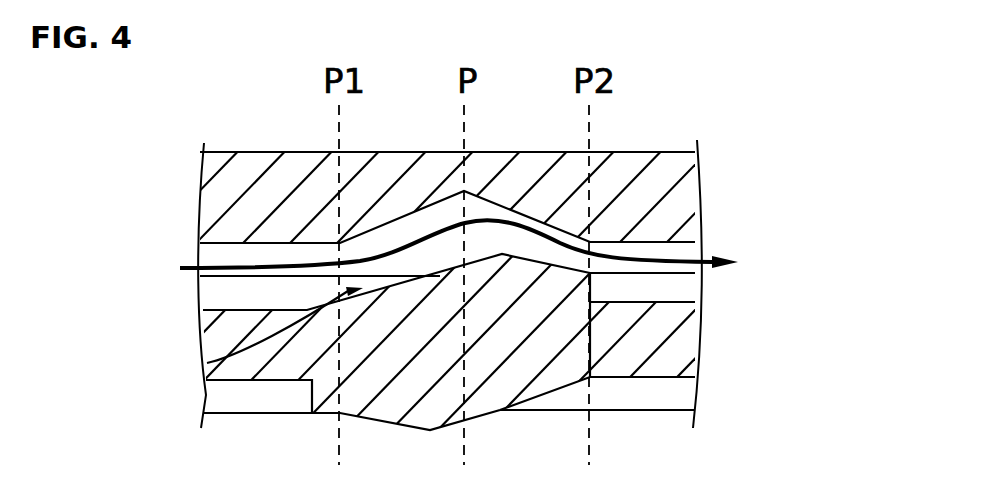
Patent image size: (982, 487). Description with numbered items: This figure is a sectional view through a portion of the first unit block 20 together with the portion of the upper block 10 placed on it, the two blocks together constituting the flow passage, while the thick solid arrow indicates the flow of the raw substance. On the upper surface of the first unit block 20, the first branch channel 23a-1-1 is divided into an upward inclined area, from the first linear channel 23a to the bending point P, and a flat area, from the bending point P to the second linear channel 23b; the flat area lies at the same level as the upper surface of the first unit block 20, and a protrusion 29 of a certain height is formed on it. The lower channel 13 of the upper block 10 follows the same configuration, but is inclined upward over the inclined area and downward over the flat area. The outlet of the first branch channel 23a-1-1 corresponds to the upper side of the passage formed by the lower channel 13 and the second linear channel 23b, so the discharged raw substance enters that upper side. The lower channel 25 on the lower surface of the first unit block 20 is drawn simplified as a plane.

The upper block 10 is at (722, 180).
The lower channel 13 is at (210, 255).
The first unit block 20 is at (738, 341).
The first linear channel 23a is at (210, 297).
The second linear channel 23b is at (698, 292).
The first branch channel 23a-1-1 is at (207, 363).
The lower channel 25 is at (700, 386).
The protrusion 29 is at (506, 238).